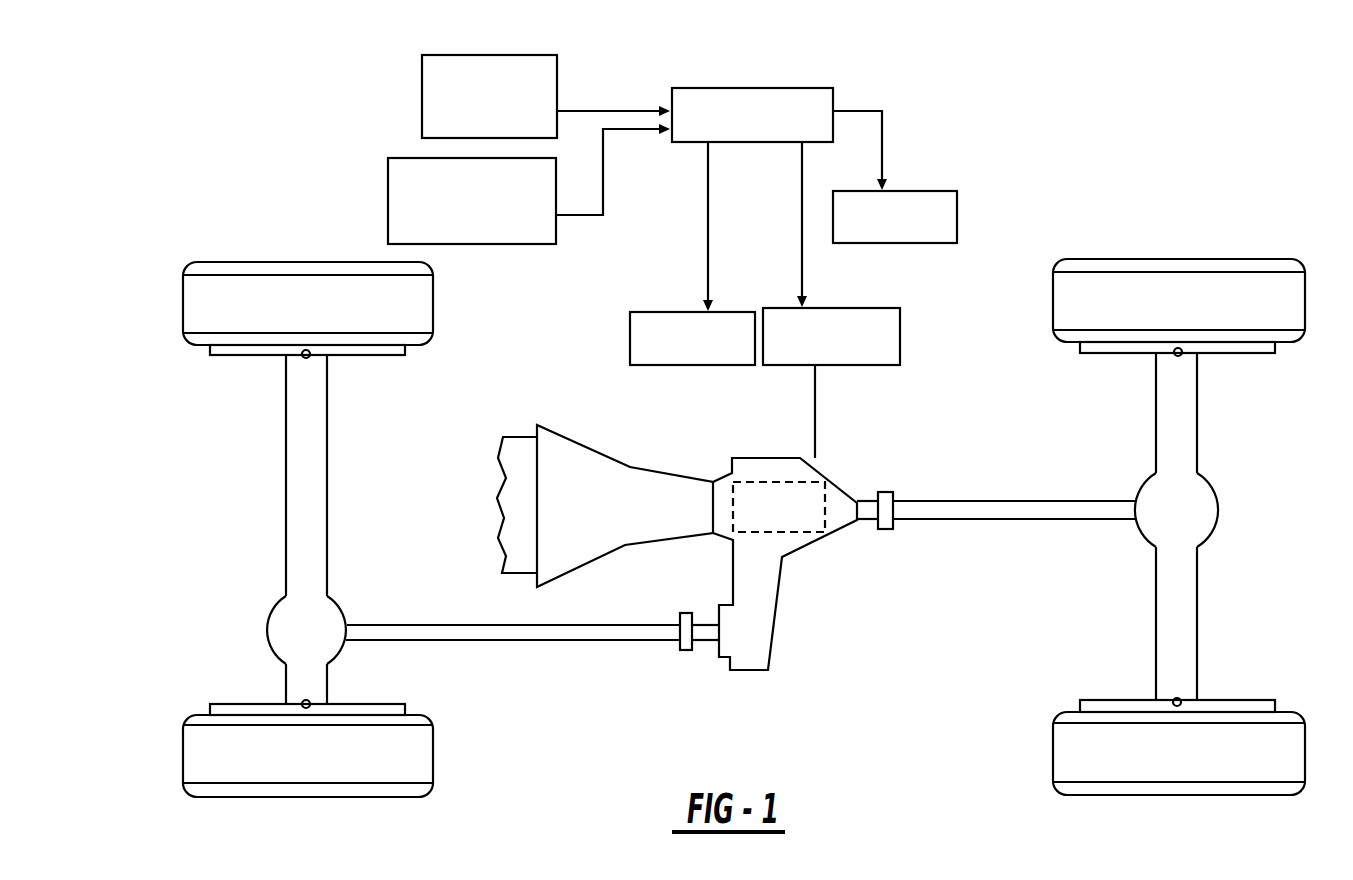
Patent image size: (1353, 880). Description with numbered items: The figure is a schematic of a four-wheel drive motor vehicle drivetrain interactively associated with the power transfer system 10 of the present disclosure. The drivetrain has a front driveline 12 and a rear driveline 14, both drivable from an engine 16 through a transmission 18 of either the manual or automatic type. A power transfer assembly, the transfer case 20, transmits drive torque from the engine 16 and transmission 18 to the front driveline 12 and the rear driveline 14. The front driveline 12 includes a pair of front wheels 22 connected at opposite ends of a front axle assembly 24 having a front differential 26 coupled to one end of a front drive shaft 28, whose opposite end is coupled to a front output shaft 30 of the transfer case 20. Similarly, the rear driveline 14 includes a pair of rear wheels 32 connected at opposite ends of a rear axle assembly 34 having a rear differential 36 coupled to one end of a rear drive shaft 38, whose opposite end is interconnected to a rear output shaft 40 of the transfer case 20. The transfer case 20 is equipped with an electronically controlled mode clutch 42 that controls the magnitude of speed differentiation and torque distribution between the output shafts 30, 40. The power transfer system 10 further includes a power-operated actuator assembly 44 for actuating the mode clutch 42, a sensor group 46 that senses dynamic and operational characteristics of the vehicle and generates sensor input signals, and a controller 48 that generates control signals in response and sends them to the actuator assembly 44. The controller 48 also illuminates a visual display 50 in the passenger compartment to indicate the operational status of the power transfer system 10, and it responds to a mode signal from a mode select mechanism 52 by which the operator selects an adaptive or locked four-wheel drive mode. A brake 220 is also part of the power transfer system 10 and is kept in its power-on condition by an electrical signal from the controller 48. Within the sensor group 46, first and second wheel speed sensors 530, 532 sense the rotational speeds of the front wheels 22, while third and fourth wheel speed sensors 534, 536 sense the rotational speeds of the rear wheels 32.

The power transfer system 10 is at (926, 107).
The front driveline 12 is at (376, 488).
The rear driveline 14 is at (1030, 446).
The engine 16 is at (494, 505).
The transmission 18 is at (625, 511).
The transfer case 20 is at (785, 564).
The front wheels 22 is at (332, 503).
The front axle assembly 24 is at (278, 529).
The front differential 26 is at (289, 619).
The front drive shaft 28 is at (532, 655).
The front output shaft 30 is at (701, 673).
The rear wheels 32 is at (1146, 497).
The rear axle assembly 34 is at (1217, 527).
The rear differential 36 is at (1204, 517).
The rear drive shaft 38 is at (1014, 539).
The rear output shaft 40 is at (882, 480).
The mode clutch 42 is at (779, 463).
The actuator assembly 44 is at (862, 383).
The sensor group 46 is at (512, 96).
The controller 48 is at (779, 166).
The visual display 50 is at (925, 205).
The mode select mechanism 52 is at (529, 214).
The brake 220 is at (692, 363).
The first wheel speed sensor 530 is at (369, 684).
The second wheel speed sensor 532 is at (363, 376).
The third wheel speed sensor 534 is at (1140, 675).
The fourth wheel speed sensor 536 is at (1139, 377).